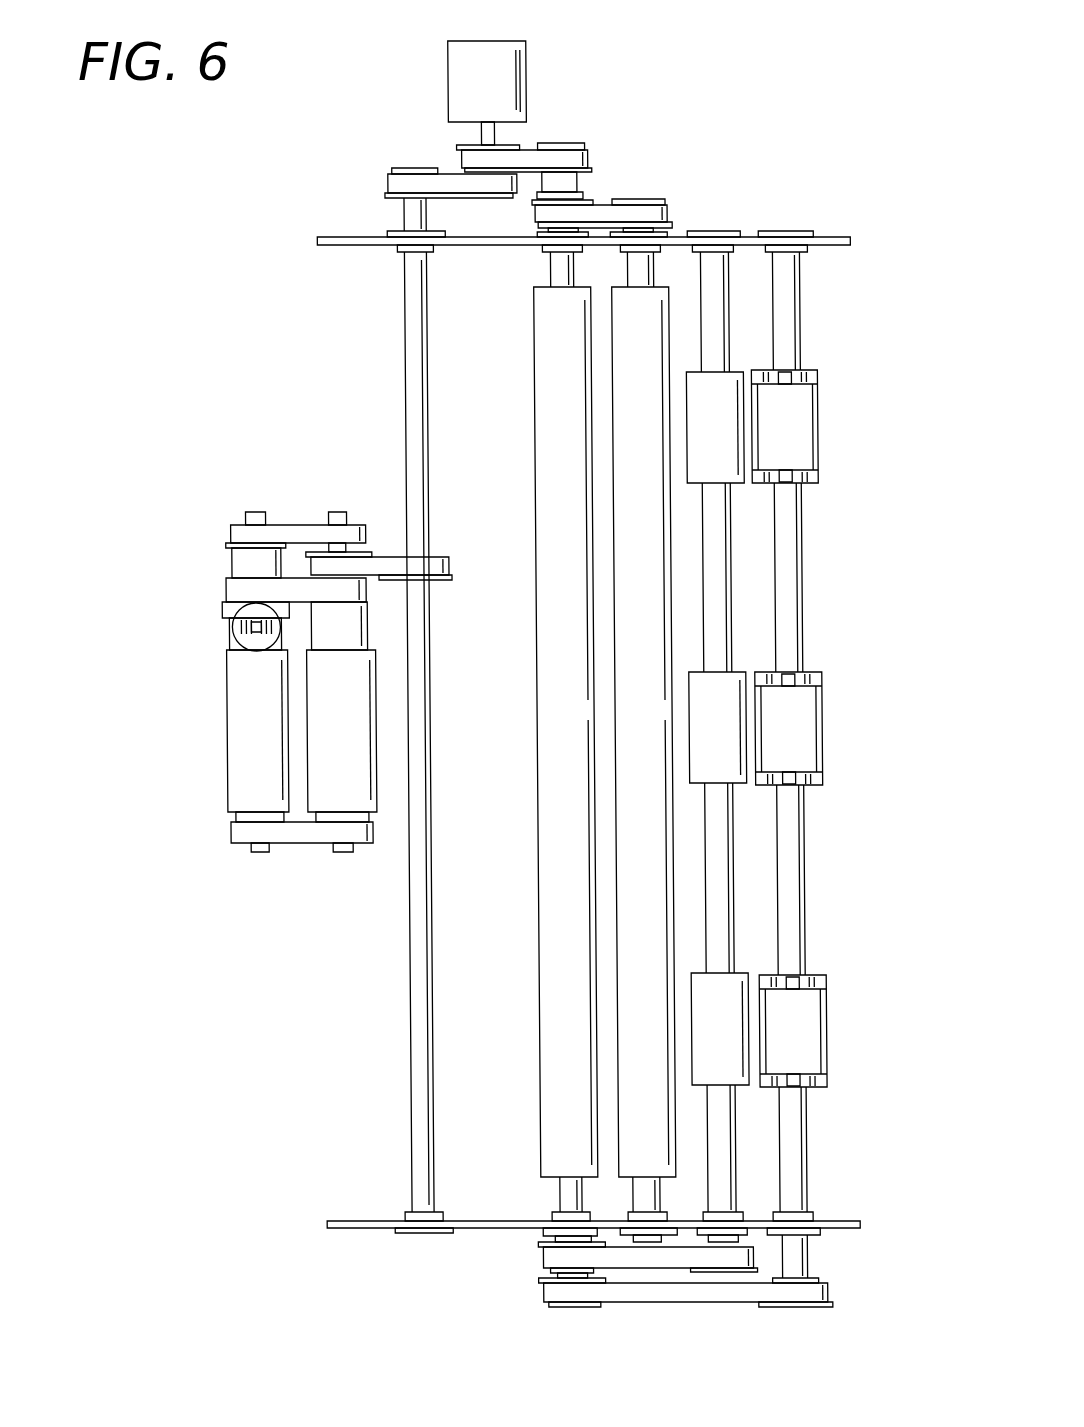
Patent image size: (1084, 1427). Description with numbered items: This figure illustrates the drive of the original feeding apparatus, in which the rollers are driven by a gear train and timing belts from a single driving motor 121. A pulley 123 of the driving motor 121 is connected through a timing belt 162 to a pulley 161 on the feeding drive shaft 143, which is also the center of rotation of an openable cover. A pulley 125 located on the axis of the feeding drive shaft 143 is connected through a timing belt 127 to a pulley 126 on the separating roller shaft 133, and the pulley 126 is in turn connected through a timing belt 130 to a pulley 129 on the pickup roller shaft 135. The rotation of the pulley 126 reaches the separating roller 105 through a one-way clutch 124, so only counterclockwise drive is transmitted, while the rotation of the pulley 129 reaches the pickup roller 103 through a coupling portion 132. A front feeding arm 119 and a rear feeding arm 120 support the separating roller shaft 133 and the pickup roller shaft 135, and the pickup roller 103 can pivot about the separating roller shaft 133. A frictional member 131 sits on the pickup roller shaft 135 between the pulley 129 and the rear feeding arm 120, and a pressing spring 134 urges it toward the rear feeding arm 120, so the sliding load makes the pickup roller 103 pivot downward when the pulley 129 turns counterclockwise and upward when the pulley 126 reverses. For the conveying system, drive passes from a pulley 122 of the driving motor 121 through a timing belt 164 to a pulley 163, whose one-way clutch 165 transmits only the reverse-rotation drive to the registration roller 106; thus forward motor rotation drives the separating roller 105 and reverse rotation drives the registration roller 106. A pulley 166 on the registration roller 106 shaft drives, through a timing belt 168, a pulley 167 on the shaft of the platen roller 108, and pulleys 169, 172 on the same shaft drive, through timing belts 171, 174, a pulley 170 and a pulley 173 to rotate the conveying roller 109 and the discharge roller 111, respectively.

The pickup roller 103 is at (235, 752).
The separating roller 105 is at (360, 760).
The registration roller 106 is at (548, 890).
The platen roller 108 is at (658, 292).
The conveying roller 109 is at (728, 297).
The discharge roller 111 is at (803, 373).
The front feeding arm 119 is at (297, 845).
The rear feeding arm 120 is at (236, 522).
The driving motor 121 is at (470, 58).
The pulley 122 is at (461, 147).
The pulley 123 is at (504, 195).
The one-way clutch 124 is at (365, 632).
The pulley 125 is at (441, 578).
The pulley 126 is at (434, 553).
The timing belt 127 is at (444, 563).
The pulley 129 is at (263, 557).
The timing belt 130 is at (298, 583).
The frictional member 131 is at (228, 546).
The coupling portion 132 is at (226, 608).
The separating roller shaft 133 is at (339, 853).
The pressing spring 134 is at (238, 630).
The pickup roller shaft 135 is at (257, 853).
The feeding drive shaft 143 is at (412, 385).
The pulley 161 is at (392, 180).
The timing belt 162 is at (432, 178).
The pulley 163 is at (576, 144).
The timing belt 164 is at (534, 157).
The one-way clutch 165 is at (581, 183).
The pulley 166 is at (536, 205).
The pulley 167 is at (639, 202).
The timing belt 168 is at (559, 215).
The pulley 169 is at (534, 1245).
The pulley 170 is at (756, 1260).
The timing belt 171 is at (626, 1262).
The pulley 172 is at (533, 1280).
The pulley 173 is at (830, 1303).
The timing belt 174 is at (713, 1297).